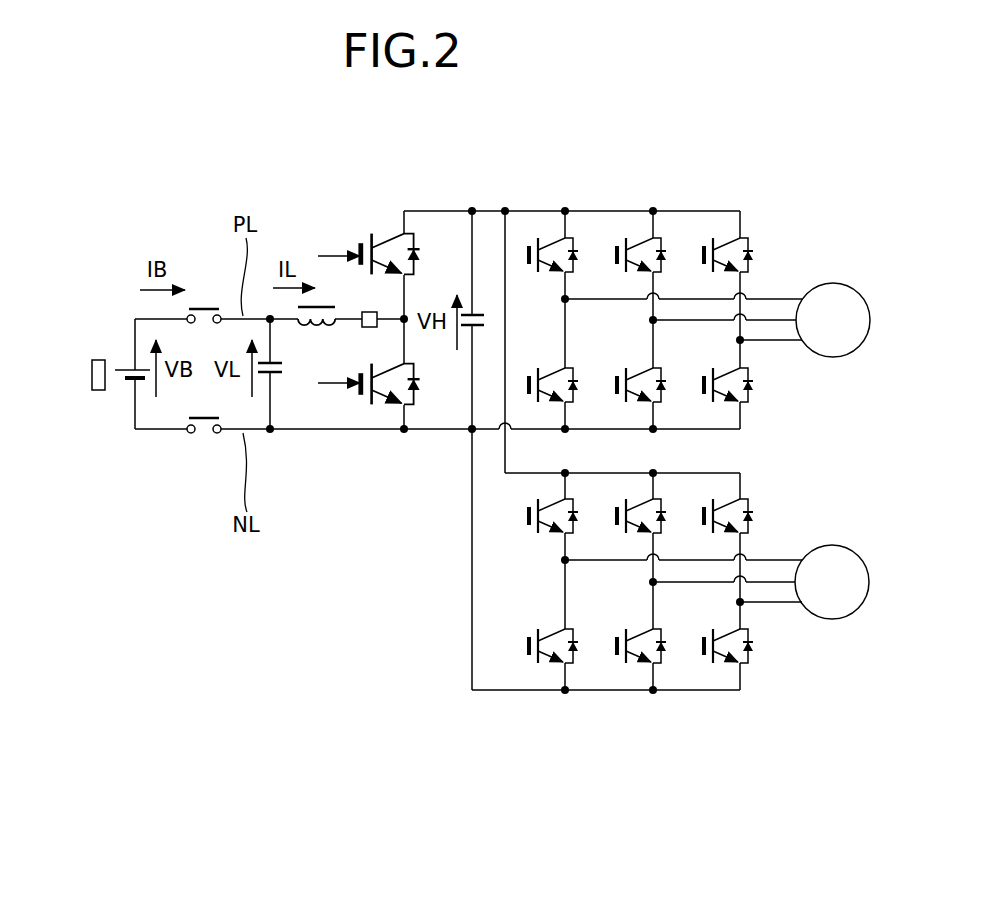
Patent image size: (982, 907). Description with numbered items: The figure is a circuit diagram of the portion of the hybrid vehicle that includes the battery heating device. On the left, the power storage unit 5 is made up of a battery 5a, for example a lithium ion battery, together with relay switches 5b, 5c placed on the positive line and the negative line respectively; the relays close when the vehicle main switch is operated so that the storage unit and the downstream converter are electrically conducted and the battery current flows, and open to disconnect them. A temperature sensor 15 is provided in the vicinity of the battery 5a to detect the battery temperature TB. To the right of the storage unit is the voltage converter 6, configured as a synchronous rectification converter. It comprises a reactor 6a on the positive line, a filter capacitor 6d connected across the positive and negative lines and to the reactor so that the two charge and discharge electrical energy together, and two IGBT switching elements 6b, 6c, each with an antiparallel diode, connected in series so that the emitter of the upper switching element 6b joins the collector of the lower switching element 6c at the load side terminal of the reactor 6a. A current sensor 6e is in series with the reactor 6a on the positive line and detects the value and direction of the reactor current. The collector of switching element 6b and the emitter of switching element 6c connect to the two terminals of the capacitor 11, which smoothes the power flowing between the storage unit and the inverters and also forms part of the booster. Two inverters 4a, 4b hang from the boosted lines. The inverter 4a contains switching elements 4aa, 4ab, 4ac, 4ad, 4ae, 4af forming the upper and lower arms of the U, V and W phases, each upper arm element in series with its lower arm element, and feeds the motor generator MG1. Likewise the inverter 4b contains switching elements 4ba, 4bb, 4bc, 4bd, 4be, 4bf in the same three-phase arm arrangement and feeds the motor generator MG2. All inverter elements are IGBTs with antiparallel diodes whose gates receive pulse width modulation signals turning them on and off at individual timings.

The power storage unit 5 is at (133, 443).
The battery 5a is at (117, 368).
The relay switch 5b is at (207, 302).
The relay switch 5c is at (201, 440).
The temperature sensor 15 is at (99, 357).
The battery temperature TB is at (66, 377).
The voltage converter 6 is at (345, 186).
The reactor 6a is at (336, 300).
The switching element 6b is at (382, 232).
The switching element 6c is at (381, 407).
The filter capacitor 6d is at (278, 376).
The current sensor 6e is at (360, 327).
The capacitor 11 is at (478, 313).
The inverter 4a is at (675, 172).
The switching element 4aa is at (548, 242).
The switching element 4ab is at (546, 372).
The switching element 4ac is at (637, 242).
The switching element 4ad is at (634, 372).
The switching element 4ae is at (724, 242).
The switching element 4af is at (720, 374).
The inverter 4b is at (637, 713).
The switching element 4ba is at (548, 503).
The switching element 4bb is at (546, 632).
The switching element 4bc is at (637, 503).
The switching element 4bd is at (634, 632).
The switching element 4be is at (724, 503).
The switching element 4bf is at (720, 636).
The motor generator MG1 is at (830, 283).
The motor generator MG2 is at (830, 545).